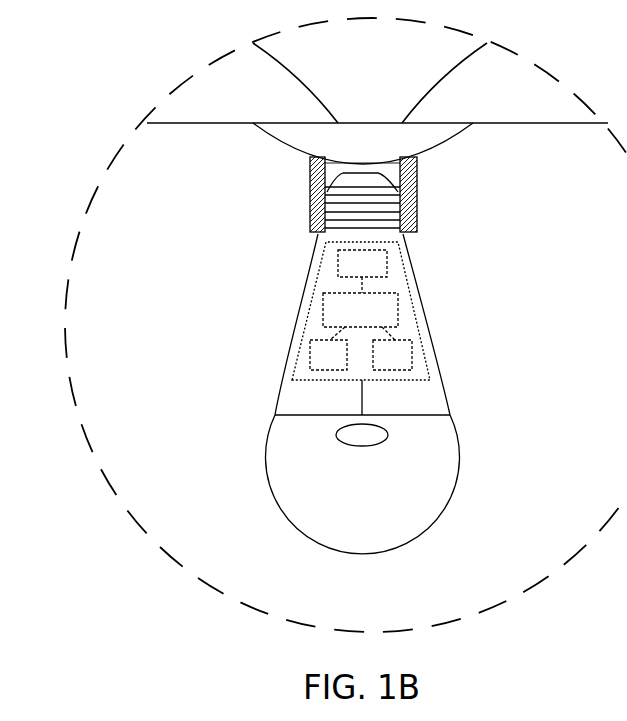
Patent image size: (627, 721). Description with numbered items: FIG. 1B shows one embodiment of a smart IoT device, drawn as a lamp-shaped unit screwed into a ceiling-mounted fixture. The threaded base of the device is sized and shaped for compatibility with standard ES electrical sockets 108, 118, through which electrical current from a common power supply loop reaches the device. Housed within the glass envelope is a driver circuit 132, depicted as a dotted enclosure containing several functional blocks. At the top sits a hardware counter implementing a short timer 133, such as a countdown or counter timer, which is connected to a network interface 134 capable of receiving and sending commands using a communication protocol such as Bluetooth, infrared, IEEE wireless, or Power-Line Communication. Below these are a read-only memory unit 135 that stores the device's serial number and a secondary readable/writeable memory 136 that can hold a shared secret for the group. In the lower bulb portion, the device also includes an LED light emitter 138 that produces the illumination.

The first electrical socket 108 is at (420, 182).
The second electrical socket 118 is at (420, 182).
The driver circuit 132 is at (400, 278).
The timer 133 is at (338, 262).
The network interface 134 is at (323, 304).
The read-only memory unit 135 is at (310, 350).
The readable/writeable memory 136 is at (412, 356).
The LED light emitter 138 is at (388, 433).